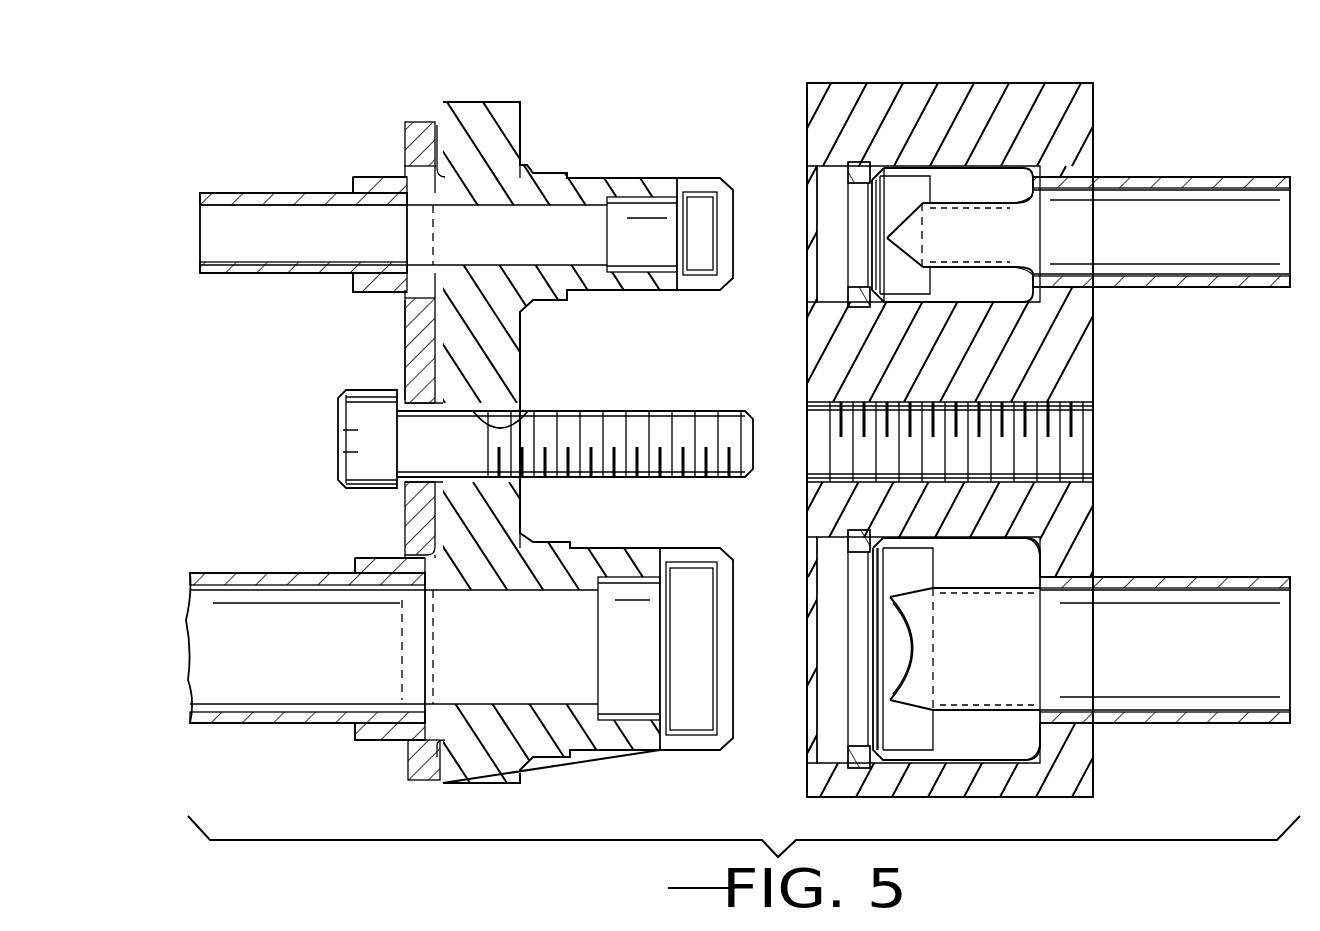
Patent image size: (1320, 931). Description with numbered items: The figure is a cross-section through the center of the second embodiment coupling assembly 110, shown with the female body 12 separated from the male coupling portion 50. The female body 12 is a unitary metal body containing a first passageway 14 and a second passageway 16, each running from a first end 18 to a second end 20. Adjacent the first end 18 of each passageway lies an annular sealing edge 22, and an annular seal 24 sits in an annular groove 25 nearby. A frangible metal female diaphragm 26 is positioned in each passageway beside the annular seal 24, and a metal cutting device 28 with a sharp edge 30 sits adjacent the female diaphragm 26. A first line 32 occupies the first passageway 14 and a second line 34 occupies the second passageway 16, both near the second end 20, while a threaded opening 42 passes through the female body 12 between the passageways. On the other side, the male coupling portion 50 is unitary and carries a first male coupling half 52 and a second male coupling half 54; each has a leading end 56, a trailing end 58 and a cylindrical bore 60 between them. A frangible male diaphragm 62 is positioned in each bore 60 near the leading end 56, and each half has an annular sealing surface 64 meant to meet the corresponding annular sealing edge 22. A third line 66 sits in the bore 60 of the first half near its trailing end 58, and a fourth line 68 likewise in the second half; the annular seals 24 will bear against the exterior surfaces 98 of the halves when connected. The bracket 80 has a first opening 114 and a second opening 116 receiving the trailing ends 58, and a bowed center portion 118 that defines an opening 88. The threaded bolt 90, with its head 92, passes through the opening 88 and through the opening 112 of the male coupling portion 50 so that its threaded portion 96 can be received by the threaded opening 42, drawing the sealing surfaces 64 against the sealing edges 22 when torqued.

The female body 12 is at (1035, 85).
The first passageway 14 is at (1085, 100).
The second passageway 16 is at (960, 765).
The first end 18 is at (820, 302).
The second end 20 is at (1120, 200).
The annular sealing edge 22 is at (855, 162).
The annular seal 24 is at (905, 170).
The annular groove 25 is at (862, 162).
The female diaphragm 26 is at (850, 272).
The cutting device 28 is at (985, 185).
The sharp edge 30 is at (915, 200).
The first line 32 is at (1245, 177).
The second line 34 is at (1250, 577).
The threaded opening 42 is at (1085, 413).
The male coupling portion 50 is at (470, 102).
The first male coupling half 52 is at (632, 197).
The second male coupling half 54 is at (615, 577).
The leading end 56 is at (728, 178).
The trailing end 58 is at (360, 177).
The cylindrical bore 60 is at (512, 250).
The male diaphragm 62 is at (809, 233).
The annular sealing surface 64 is at (530, 168).
The third line 66 is at (235, 193).
The fourth line 68 is at (225, 573).
The bracket 80 is at (420, 122).
The opening 88 is at (405, 460).
The threaded bolt 90 is at (355, 412).
The head 92 is at (355, 455).
The threaded portion 96 is at (640, 411).
The exterior surface 98 is at (575, 178).
The second embodiment coupling assembly 110 is at (662, 95).
The opening 112 is at (500, 418).
The first opening 114 is at (408, 160).
The second opening 116 is at (410, 755).
The center portion 118 is at (403, 352).